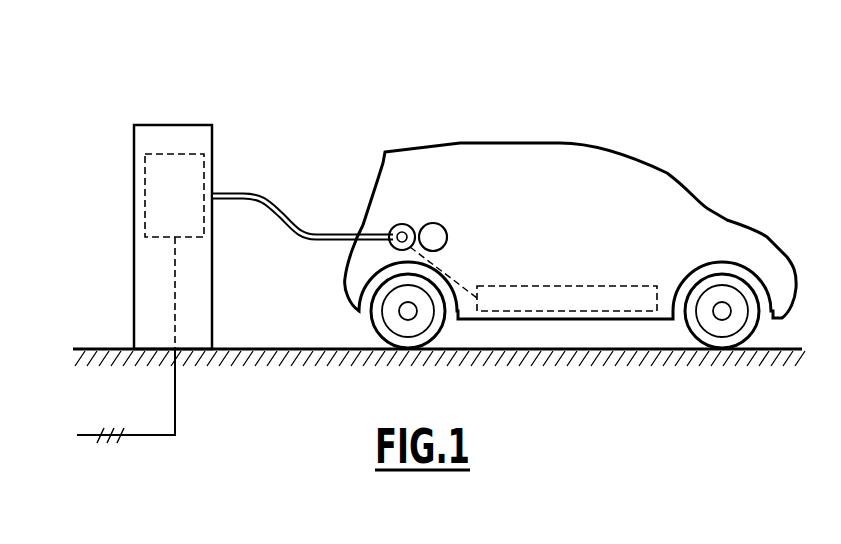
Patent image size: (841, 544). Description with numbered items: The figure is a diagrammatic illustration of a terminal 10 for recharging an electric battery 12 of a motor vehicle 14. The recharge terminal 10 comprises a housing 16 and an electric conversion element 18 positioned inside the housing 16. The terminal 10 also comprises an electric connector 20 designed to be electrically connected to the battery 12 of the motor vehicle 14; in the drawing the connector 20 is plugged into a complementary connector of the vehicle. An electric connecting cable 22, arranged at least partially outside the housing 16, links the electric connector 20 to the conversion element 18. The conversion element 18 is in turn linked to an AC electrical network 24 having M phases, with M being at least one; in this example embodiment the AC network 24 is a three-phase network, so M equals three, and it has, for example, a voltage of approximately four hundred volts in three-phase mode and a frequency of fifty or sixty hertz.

The recharge terminal 10 is at (155, 191).
The electric battery 12 is at (577, 286).
The motor vehicle 14 is at (668, 172).
The housing 16 is at (212, 148).
The electric conversion element 18 is at (177, 153).
The electric connector 20 is at (402, 233).
The electric connecting cable 22 is at (288, 218).
The AC electrical network 24 is at (145, 437).